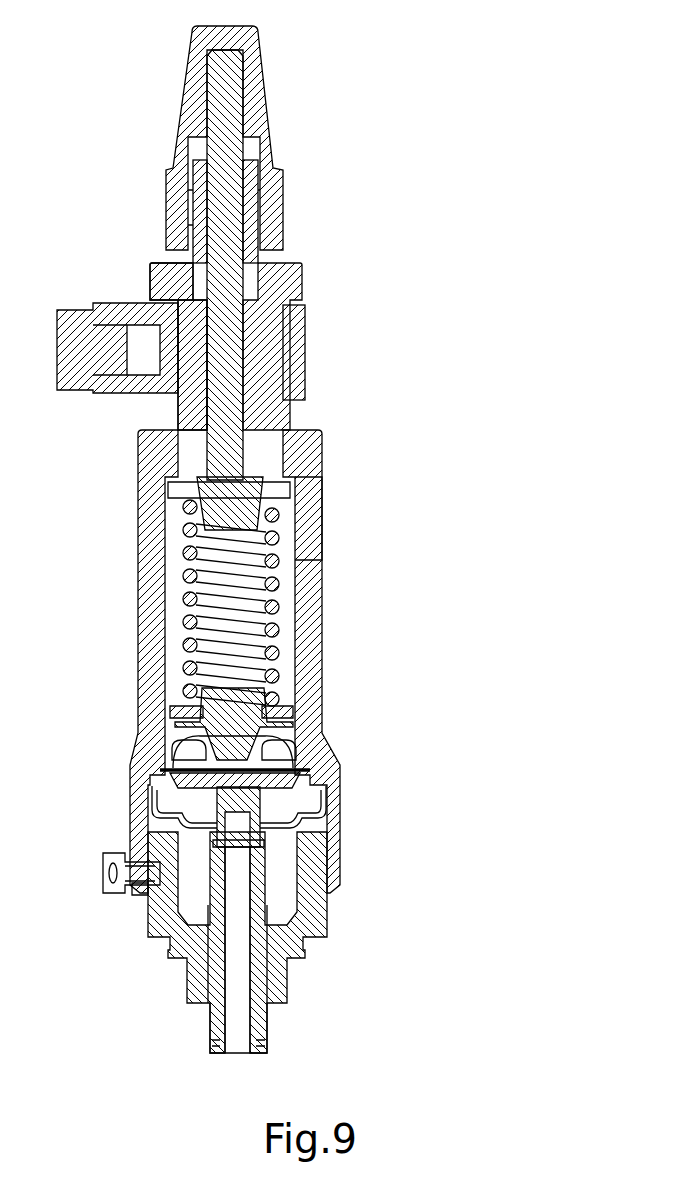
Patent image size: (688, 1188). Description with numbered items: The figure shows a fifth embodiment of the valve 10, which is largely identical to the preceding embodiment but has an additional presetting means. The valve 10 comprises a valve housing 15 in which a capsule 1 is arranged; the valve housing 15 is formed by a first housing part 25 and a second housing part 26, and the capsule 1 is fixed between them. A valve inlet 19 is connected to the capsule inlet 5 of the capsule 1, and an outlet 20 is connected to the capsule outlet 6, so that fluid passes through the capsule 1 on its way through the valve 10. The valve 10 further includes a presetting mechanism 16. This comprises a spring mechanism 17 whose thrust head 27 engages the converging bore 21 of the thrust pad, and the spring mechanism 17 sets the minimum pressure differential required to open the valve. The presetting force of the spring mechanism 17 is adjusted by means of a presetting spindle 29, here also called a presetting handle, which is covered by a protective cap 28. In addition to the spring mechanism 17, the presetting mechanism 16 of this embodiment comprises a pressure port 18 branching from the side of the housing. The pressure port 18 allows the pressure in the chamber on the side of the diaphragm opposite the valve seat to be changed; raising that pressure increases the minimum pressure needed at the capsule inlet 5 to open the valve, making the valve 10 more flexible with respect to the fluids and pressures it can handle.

The valve 10 is at (406, 321).
The protective cap 28 is at (270, 103).
The presetting spindle 29 is at (212, 108).
The presetting mechanism 16 is at (306, 267).
The pressure port 18 is at (112, 303).
The first housing part 25 is at (308, 622).
The valve housing 15 is at (307, 510).
The spring mechanism 17 is at (279, 562).
The thrust head 27 is at (230, 712).
The capsule 1 is at (295, 731).
The converging bore 21 is at (293, 739).
The capsule inlet 5 is at (200, 803).
The capsule outlet 6 is at (238, 827).
The second housing part 26 is at (307, 817).
The outlet 20 is at (238, 1023).
The valve inlet 19 is at (192, 887).